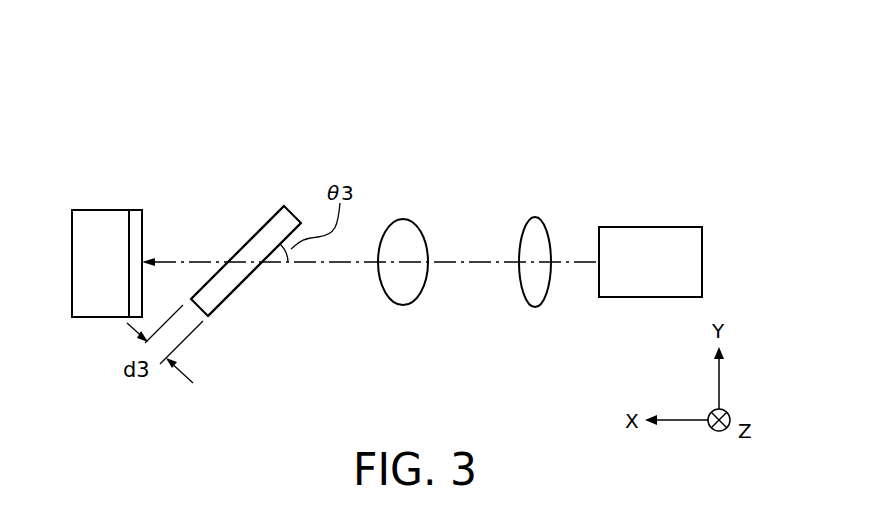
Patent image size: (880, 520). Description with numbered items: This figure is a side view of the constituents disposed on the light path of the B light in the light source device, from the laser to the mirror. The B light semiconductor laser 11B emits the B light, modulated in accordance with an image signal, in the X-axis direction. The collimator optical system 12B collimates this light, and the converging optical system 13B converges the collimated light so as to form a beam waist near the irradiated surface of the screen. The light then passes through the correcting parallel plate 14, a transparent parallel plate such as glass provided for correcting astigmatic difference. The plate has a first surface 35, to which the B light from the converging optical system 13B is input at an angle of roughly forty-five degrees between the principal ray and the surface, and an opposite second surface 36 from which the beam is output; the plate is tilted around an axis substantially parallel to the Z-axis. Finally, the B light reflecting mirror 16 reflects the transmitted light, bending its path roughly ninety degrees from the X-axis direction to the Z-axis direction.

The B light semiconductor laser 11B is at (648, 237).
The collimator optical system 12B is at (535, 227).
The converging optical system 13B is at (400, 230).
The correcting parallel plate 14 is at (271, 204).
The B light reflecting mirror 16 is at (102, 220).
The first surface 35 is at (238, 287).
The second surface 36 is at (245, 245).